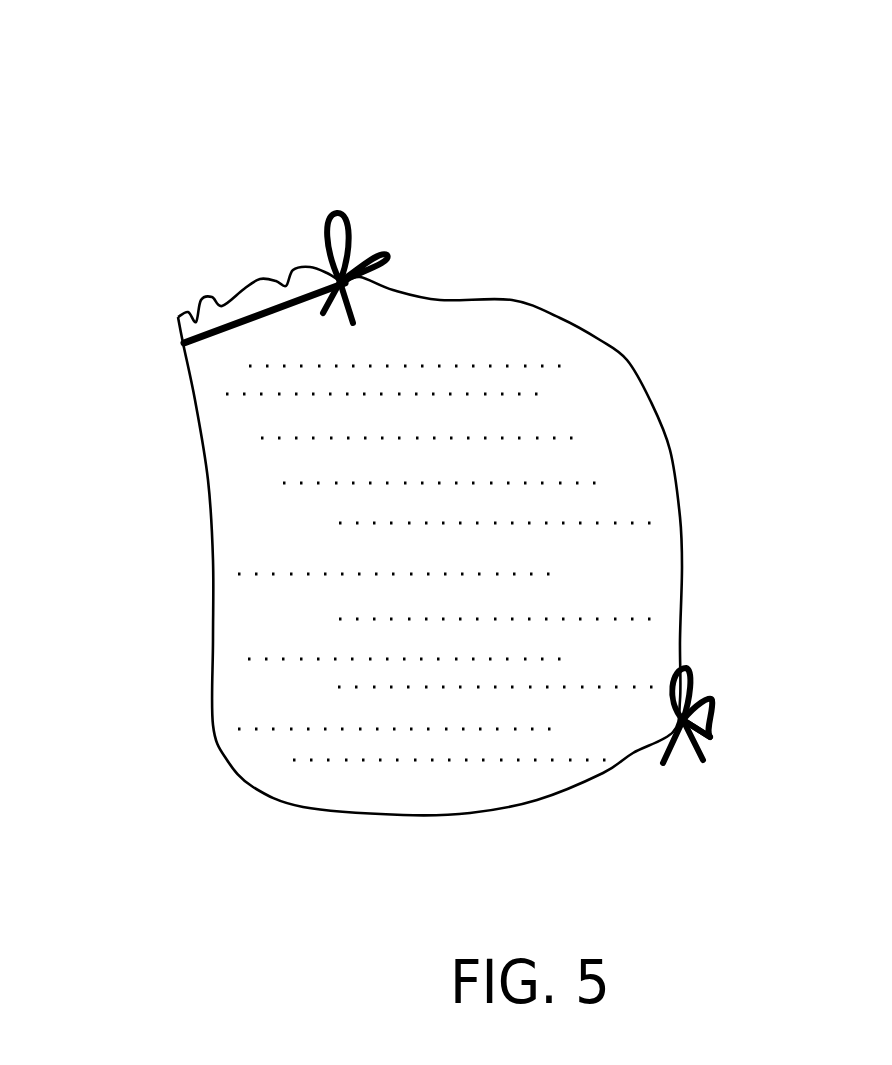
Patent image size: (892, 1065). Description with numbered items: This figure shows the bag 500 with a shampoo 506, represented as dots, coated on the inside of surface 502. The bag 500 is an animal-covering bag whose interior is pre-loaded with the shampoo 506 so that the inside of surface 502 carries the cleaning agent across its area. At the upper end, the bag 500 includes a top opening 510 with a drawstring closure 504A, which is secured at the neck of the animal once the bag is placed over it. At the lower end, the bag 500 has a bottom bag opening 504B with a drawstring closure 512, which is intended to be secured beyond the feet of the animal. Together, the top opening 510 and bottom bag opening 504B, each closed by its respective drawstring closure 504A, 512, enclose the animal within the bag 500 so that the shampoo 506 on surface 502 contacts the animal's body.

The bag 500 is at (675, 68).
The surface 502 is at (512, 300).
The drawstring closure 504A is at (390, 252).
The bottom bag opening 504B is at (688, 670).
The shampoo 506 is at (605, 517).
The top opening 510 is at (190, 312).
The drawstring closure 512 is at (710, 737).